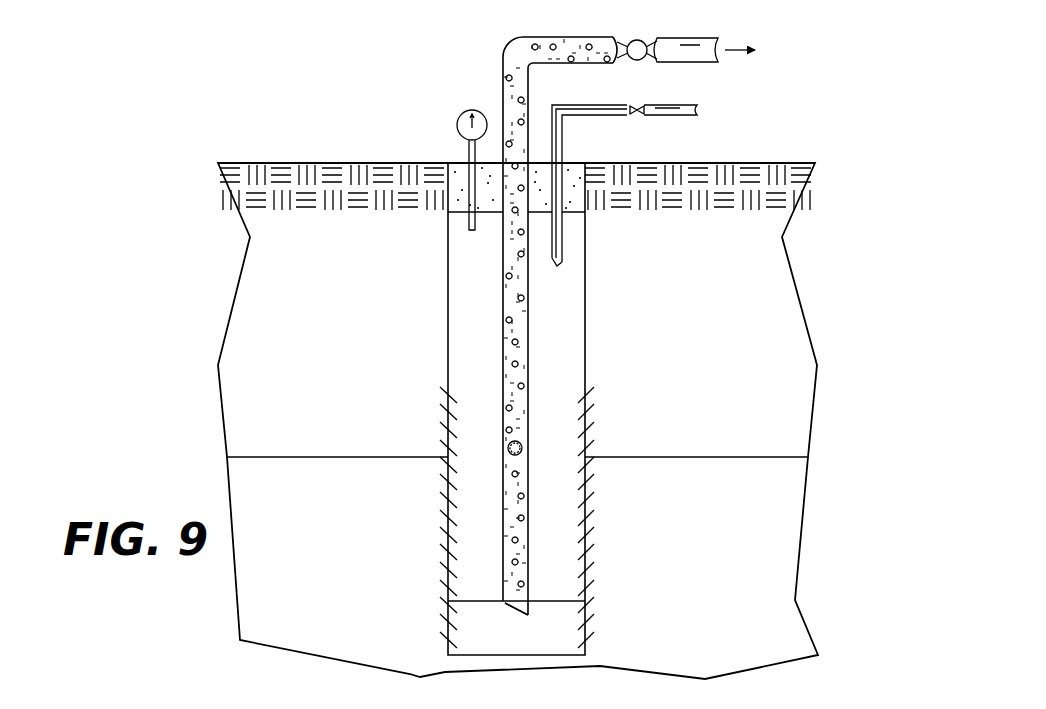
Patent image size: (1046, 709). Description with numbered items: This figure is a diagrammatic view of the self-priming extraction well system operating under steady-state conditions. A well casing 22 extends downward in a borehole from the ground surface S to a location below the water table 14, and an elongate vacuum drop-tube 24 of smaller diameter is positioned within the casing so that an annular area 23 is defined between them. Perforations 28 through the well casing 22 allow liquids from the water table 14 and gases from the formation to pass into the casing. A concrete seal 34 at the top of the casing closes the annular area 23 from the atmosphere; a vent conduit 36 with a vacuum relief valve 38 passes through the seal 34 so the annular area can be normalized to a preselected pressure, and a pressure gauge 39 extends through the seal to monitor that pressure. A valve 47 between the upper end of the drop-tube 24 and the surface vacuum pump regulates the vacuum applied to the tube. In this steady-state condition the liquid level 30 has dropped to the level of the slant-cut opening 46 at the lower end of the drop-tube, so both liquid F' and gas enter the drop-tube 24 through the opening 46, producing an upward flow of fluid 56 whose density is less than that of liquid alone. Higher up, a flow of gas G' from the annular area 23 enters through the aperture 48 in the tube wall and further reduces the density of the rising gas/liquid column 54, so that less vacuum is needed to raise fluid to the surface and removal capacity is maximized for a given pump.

The water table 14 is at (668, 455).
The well casing 22 is at (445, 333).
The annular area 23 is at (488, 302).
The vacuum drop-tube 24 is at (523, 37).
The perforations 28 is at (443, 552).
The liquid level 30 is at (552, 598).
The concrete seal 34 is at (455, 160).
The vent conduit 36 is at (606, 100).
The vacuum relief valve 38 is at (640, 115).
The pressure gauge 39 is at (468, 111).
The opening 46 is at (522, 616).
The valve 47 is at (643, 42).
The air inlet port or aperture 48 is at (523, 440).
The gas/liquid column 54 is at (532, 512).
The upward flow of fluid 56 is at (525, 375).
The ground surface S is at (308, 163).
The flow of gas G' is at (487, 425).
The liquid F' is at (491, 629).